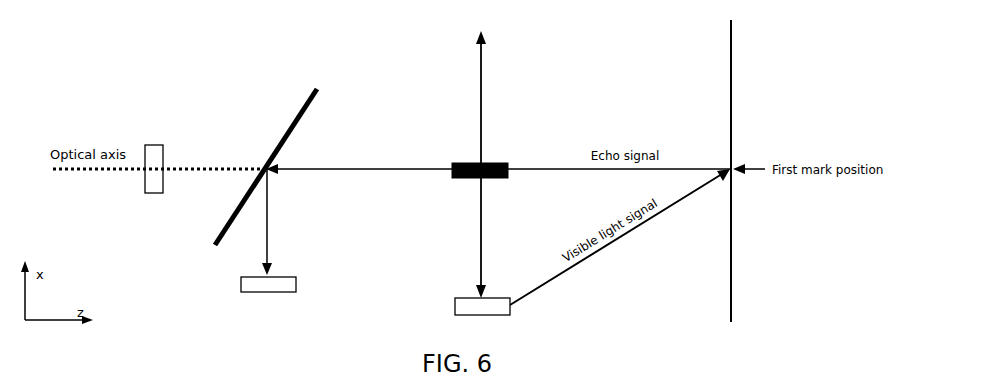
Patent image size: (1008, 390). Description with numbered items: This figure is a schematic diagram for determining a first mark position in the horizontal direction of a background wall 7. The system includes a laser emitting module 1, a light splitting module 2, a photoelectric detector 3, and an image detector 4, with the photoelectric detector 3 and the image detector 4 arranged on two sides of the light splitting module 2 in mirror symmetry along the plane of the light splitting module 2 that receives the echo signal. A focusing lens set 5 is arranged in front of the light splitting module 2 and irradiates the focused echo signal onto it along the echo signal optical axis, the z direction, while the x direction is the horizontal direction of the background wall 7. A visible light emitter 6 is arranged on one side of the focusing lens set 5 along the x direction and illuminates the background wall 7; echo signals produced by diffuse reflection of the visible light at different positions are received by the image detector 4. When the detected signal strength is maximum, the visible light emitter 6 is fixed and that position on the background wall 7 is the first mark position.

The laser emitting module 1 is at (490, 163).
The light splitting module 2 is at (290, 118).
The photoelectric detector 3 is at (157, 145).
The image detector 4 is at (296, 285).
The focusing lens set 5 is at (481, 57).
The visible light emitter 6 is at (462, 309).
The background wall 7 is at (731, 48).